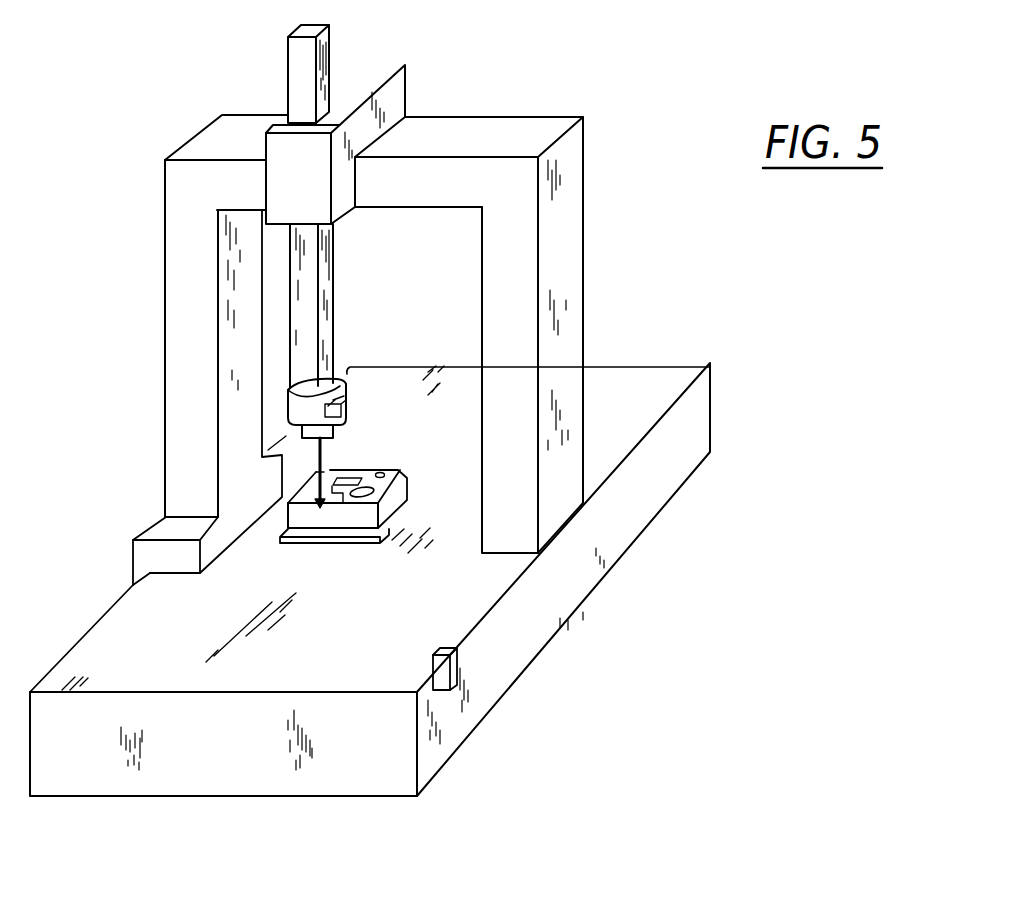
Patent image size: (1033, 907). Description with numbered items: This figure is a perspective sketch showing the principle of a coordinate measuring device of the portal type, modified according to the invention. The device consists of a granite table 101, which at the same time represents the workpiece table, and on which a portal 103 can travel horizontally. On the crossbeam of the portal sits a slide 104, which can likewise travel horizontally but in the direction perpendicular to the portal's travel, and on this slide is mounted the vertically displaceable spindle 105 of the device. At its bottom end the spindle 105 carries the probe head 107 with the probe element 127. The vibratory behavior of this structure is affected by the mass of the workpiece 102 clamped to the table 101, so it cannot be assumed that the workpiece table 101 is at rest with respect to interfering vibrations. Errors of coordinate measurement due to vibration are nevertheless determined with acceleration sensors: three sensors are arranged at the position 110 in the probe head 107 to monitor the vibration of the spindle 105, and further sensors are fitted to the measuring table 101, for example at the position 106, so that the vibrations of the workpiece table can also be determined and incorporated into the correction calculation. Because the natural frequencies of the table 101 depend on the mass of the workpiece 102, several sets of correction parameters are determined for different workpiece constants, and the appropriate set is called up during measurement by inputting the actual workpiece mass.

The granite table 101 is at (687, 457).
The workpiece 102 is at (398, 490).
The portal 103 is at (573, 312).
The slide 104 is at (377, 73).
The spindle 105 is at (296, 63).
The position of further sensors on the measuring table 106 is at (455, 670).
The probe head 107 is at (342, 406).
The position of sensors in the probe head 110 is at (323, 336).
The probe element 127 is at (331, 507).